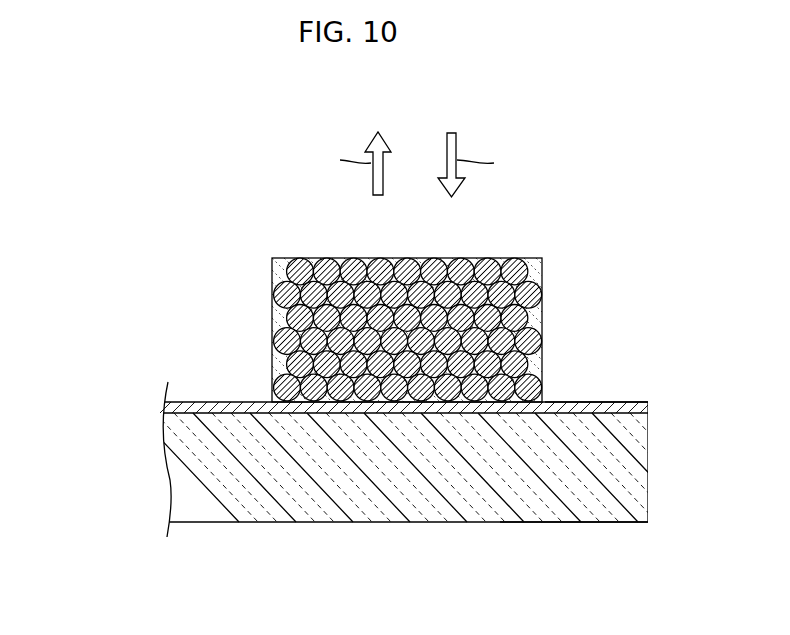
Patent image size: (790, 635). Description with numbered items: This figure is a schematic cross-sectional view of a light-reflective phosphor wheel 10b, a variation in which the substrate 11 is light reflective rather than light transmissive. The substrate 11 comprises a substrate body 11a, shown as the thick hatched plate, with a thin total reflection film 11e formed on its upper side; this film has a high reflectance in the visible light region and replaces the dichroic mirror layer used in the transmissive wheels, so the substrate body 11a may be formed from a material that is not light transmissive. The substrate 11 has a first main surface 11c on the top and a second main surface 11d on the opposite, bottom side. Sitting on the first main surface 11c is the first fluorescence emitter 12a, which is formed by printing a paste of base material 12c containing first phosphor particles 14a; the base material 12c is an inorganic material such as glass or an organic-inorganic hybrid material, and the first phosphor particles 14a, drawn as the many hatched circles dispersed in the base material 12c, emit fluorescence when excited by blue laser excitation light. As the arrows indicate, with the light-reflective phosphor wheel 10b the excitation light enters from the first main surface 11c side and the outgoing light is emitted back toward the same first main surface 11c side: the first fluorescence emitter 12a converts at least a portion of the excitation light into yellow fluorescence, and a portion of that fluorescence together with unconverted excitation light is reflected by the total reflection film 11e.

The light-reflective phosphor wheel 10b is at (171, 190).
The substrate 11 is at (94, 398).
The substrate body 11a is at (178, 470).
The first main surface 11c is at (584, 401).
The second main surface 11d is at (593, 523).
The total reflection film 11e is at (166, 409).
The first fluorescence emitter 12a is at (260, 260).
The base material 12c is at (278, 319).
The first phosphor particles 14a is at (432, 257).